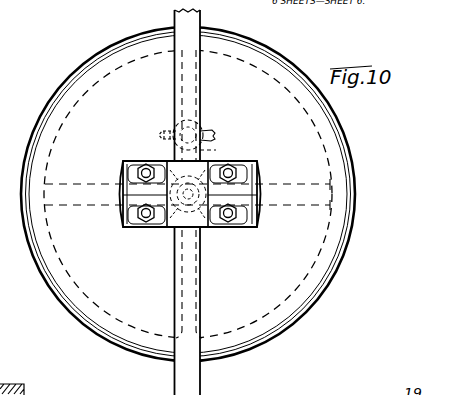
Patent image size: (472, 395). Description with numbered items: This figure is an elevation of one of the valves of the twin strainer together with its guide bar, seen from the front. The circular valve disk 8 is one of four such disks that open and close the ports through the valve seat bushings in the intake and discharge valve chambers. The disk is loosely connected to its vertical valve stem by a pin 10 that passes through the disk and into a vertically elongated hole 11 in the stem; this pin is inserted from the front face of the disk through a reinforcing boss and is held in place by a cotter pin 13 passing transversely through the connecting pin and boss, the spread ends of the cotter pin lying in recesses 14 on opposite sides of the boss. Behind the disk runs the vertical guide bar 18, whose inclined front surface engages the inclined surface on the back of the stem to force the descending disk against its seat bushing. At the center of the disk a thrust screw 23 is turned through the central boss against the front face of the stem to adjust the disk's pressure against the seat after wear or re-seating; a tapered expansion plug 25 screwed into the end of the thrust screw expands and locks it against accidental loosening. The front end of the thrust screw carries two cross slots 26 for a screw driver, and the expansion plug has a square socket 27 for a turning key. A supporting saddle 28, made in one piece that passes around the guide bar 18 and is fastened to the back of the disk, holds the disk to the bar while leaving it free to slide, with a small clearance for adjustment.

The valve disk 8 is at (188, 194).
The pin 10 is at (200, 128).
The vertically elongated hole 11 is at (212, 151).
The cotter pin 13 is at (213, 134).
The recesses 14 is at (175, 128).
The guide bar 18 is at (174, 386).
The thrust screw 23 is at (172, 229).
The tapered expansion plug 25 is at (208, 230).
The cross slots 26 is at (118, 206).
The square socket 27 is at (258, 196).
The supporting saddle 28 is at (258, 220).